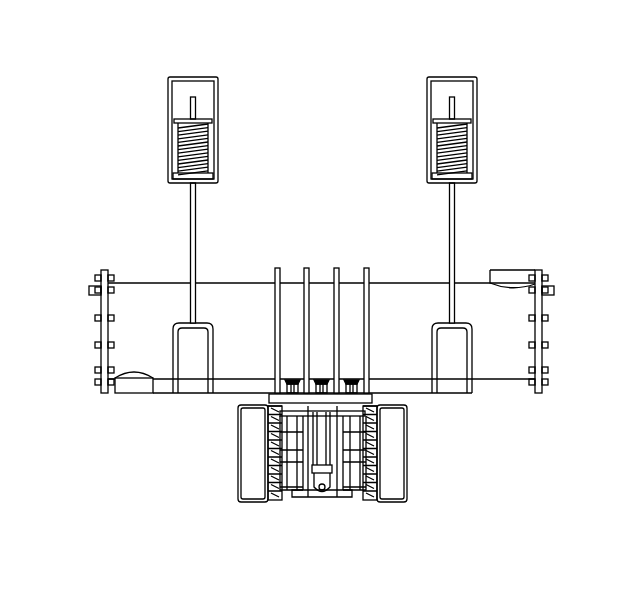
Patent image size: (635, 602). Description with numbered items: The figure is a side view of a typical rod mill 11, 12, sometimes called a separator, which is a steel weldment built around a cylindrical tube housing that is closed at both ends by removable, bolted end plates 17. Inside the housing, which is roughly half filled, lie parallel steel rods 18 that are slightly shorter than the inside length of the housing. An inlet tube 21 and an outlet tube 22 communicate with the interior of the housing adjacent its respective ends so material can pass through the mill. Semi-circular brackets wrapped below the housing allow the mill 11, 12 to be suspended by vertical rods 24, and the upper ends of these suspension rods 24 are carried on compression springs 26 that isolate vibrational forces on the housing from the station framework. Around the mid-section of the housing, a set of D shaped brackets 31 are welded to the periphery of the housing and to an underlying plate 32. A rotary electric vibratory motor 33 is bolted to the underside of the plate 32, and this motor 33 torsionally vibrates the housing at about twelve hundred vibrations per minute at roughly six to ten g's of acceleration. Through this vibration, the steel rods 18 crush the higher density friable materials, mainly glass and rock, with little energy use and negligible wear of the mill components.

The rod mill 11 is at (133, 192).
The rod mill 12 is at (332, 314).
The end plates 17 is at (100, 332).
The steel rods 18 is at (626, 403).
The inlet tube 21 is at (508, 275).
The outlet tube 22 is at (137, 385).
The vertical rods 24 is at (190, 242).
The compression springs 26 is at (187, 146).
The D shaped brackets 31 is at (369, 310).
The plate 32 is at (372, 397).
The rotary electric vibratory motor 33 is at (393, 503).